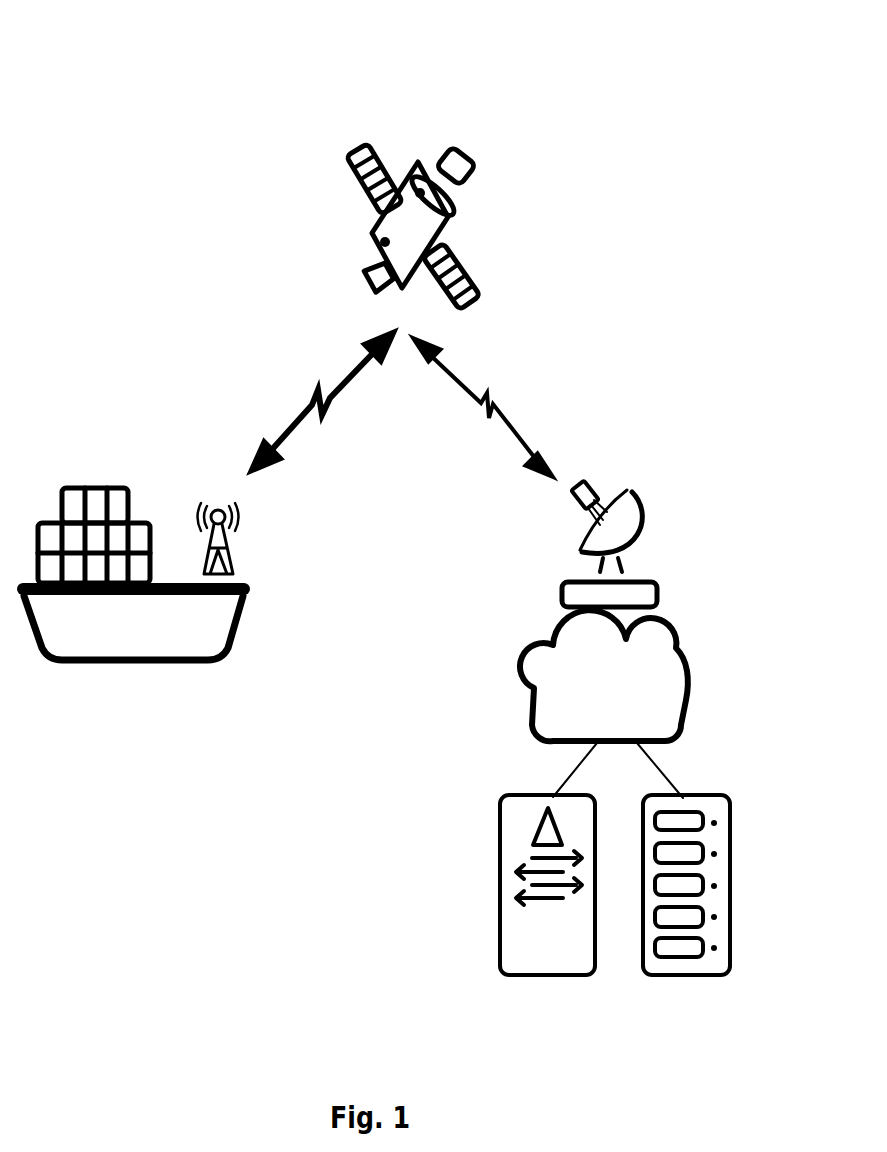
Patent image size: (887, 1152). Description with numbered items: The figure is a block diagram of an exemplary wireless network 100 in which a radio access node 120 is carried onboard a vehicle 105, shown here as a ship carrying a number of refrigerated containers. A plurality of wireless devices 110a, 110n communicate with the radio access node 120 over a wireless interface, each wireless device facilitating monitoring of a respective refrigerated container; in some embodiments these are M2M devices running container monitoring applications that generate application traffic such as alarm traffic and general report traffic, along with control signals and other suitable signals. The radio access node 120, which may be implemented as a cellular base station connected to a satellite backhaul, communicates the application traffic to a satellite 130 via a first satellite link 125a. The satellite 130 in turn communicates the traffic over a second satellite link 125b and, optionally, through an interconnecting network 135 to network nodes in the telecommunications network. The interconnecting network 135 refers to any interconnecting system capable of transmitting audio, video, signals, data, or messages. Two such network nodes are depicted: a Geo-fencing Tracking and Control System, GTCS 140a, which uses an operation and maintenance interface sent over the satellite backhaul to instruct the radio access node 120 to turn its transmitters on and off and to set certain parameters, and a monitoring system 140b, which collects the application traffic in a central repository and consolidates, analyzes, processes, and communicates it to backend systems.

The wireless network 100 is at (103, 108).
The vehicle 105 is at (82, 645).
The wireless device 110a is at (72, 507).
The wireless device 110n is at (143, 573).
The radio access node 120 is at (237, 516).
The first satellite link 125a is at (312, 402).
The second satellite link 125b is at (498, 403).
The satellite 130 is at (360, 150).
The interconnecting network 135 is at (618, 693).
The Geo-fencing Tracking and Control System (GTCS) 140a is at (543, 958).
The monitoring system 140b is at (700, 953).